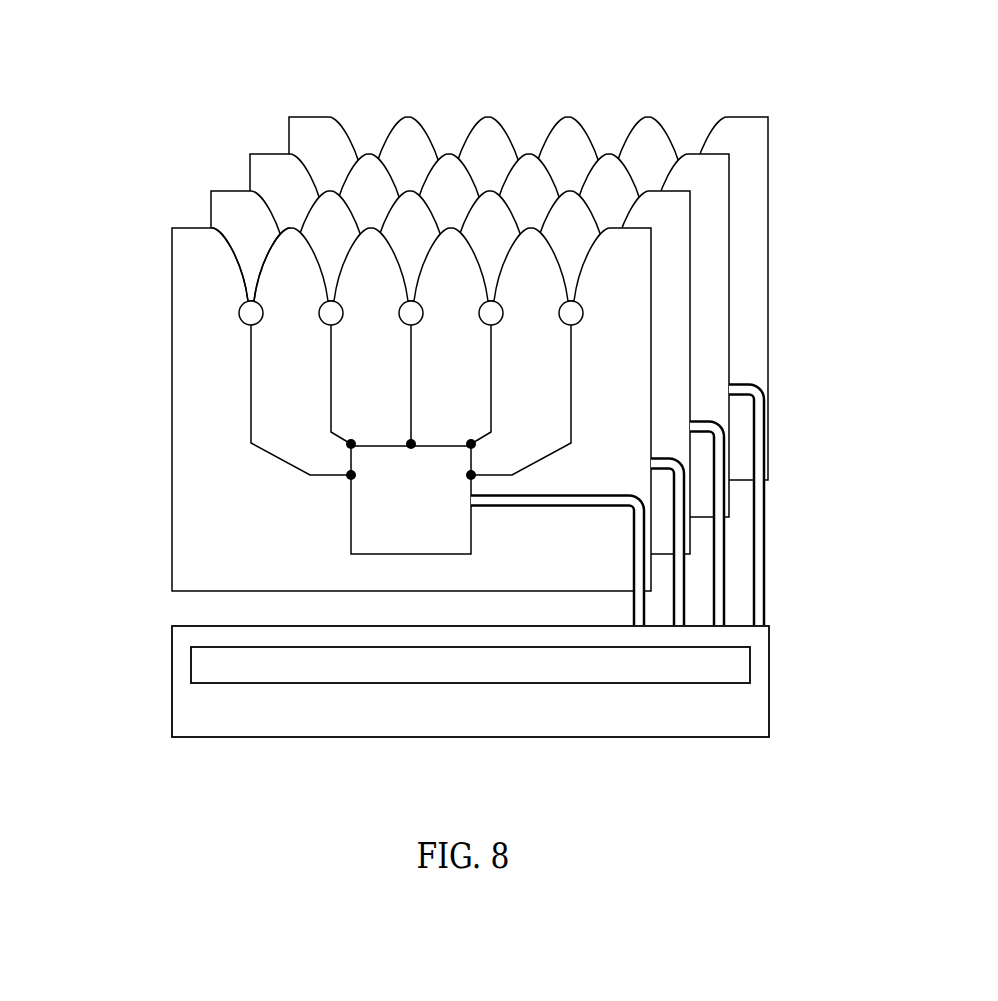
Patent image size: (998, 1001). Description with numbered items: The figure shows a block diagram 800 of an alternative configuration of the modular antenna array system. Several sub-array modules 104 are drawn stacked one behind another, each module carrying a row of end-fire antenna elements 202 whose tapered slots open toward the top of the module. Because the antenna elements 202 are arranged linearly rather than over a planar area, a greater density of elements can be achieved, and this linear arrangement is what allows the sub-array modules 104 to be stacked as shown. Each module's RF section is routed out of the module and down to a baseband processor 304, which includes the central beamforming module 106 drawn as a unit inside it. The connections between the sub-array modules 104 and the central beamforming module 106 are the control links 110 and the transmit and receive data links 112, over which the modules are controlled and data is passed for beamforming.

The block diagram 800 is at (482, 32).
The end-fire antenna element 202 is at (236, 309).
The RF beamforming antenna module 104 is at (344, 406).
The central beamforming module 106 is at (191, 663).
The control link 110 is at (719, 508).
The transmit and receive data link 112 is at (615, 508).
The baseband processor 304 is at (767, 717).